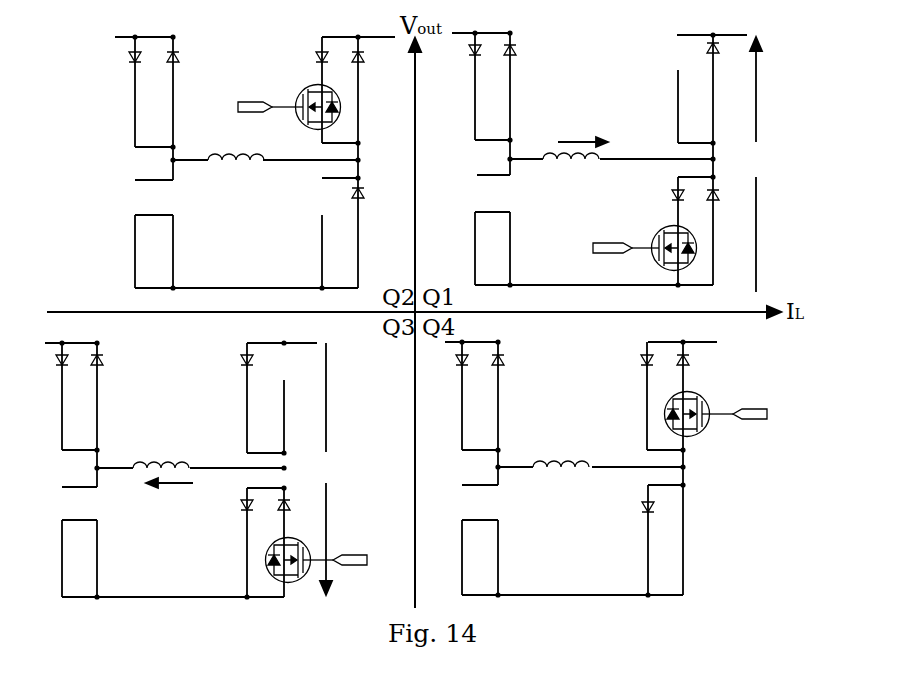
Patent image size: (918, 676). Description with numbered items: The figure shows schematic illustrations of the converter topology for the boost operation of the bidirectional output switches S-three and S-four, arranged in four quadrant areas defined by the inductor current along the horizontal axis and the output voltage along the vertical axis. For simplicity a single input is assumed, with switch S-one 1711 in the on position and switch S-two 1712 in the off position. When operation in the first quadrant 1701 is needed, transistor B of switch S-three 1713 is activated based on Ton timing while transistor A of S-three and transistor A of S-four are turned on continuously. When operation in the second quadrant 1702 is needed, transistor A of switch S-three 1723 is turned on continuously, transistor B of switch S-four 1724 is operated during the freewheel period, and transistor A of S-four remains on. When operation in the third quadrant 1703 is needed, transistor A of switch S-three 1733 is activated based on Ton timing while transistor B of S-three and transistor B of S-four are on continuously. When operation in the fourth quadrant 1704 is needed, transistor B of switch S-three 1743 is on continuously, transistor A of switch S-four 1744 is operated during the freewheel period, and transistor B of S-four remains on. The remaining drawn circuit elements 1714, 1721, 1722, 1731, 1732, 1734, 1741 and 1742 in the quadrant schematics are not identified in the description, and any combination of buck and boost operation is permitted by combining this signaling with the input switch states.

The quadrant Q1 1701 is at (424, 283).
The quadrant Q2 1702 is at (403, 282).
The quadrant Q3 1703 is at (402, 343).
The quadrant Q4 1704 is at (427, 342).
The switch S1 1711 is at (518, 45).
The switch S2 1712 is at (490, 196).
The transistor B of switch S3 1713 is at (652, 227).
The diode 1714 is at (700, 48).
The diode 1721 is at (180, 55).
The capacitor 1722 is at (148, 204).
The transistor A of bidirectional switch S3 (S3A) 1723 is at (345, 188).
The transistor B of bidirectional switch S4 (S4B) 1724 is at (308, 82).
The diode 1731 is at (104, 355).
The capacitor 1732 is at (80, 503).
The transistor A of switch S3 1733 is at (263, 554).
The diode 1734 is at (243, 368).
The diode 1741 is at (505, 355).
The capacitor 1742 is at (478, 502).
The transistor B of bidirectional switch S3 (S3B) 1743 is at (645, 512).
The transistor A of bidirectional switch S4 1744 is at (660, 405).